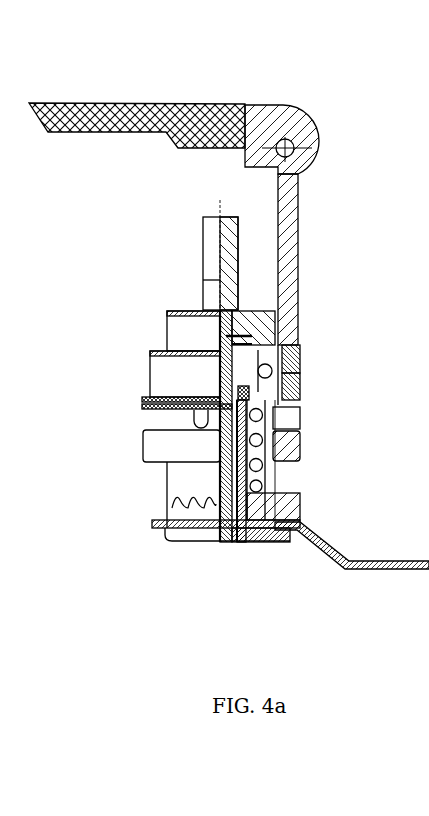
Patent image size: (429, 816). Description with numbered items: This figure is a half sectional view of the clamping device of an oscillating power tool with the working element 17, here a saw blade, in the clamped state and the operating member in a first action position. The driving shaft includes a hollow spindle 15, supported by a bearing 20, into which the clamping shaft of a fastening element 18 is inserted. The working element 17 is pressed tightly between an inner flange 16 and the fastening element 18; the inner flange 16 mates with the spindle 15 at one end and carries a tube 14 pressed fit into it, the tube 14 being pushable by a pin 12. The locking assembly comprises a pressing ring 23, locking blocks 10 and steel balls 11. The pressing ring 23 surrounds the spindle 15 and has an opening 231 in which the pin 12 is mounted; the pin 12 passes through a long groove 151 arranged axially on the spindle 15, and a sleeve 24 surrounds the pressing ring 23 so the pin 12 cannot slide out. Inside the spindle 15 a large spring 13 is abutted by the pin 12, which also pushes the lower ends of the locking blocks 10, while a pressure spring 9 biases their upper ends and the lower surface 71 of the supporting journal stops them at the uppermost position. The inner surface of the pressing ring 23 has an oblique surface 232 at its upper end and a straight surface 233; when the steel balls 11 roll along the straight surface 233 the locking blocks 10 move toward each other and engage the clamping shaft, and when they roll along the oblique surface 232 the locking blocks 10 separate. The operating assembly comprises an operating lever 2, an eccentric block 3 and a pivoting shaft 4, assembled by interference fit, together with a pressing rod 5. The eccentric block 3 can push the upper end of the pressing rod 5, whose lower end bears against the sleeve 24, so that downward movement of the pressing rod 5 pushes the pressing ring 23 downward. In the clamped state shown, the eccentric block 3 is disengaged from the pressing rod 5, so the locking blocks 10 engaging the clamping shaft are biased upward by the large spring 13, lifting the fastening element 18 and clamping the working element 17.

The operating lever 2 is at (183, 103).
The eccentric block 3 is at (300, 122).
The pivoting shaft 4 is at (306, 150).
The pressing rod 5 is at (298, 270).
The pressure spring 9 is at (275, 330).
The lower surface of the supporting journal 71 is at (270, 340).
The locking block 10 is at (279, 352).
The oblique surface 232 is at (300, 360).
The steel ball 11 is at (300, 374).
The straight surface 233 is at (300, 386).
The pin 12 is at (273, 402).
The large spring 13 is at (286, 428).
The tube 14 is at (300, 447).
The hollow spindle 15 is at (192, 486).
The inner flange 16 is at (200, 521).
The working element 17 is at (330, 549).
The fastening element 18 is at (250, 543).
The sleeve 24 is at (180, 383).
The pressing ring 23 is at (220, 403).
The opening 231 is at (240, 395).
The long groove 151 is at (200, 421).
The bearing 20 is at (190, 449).